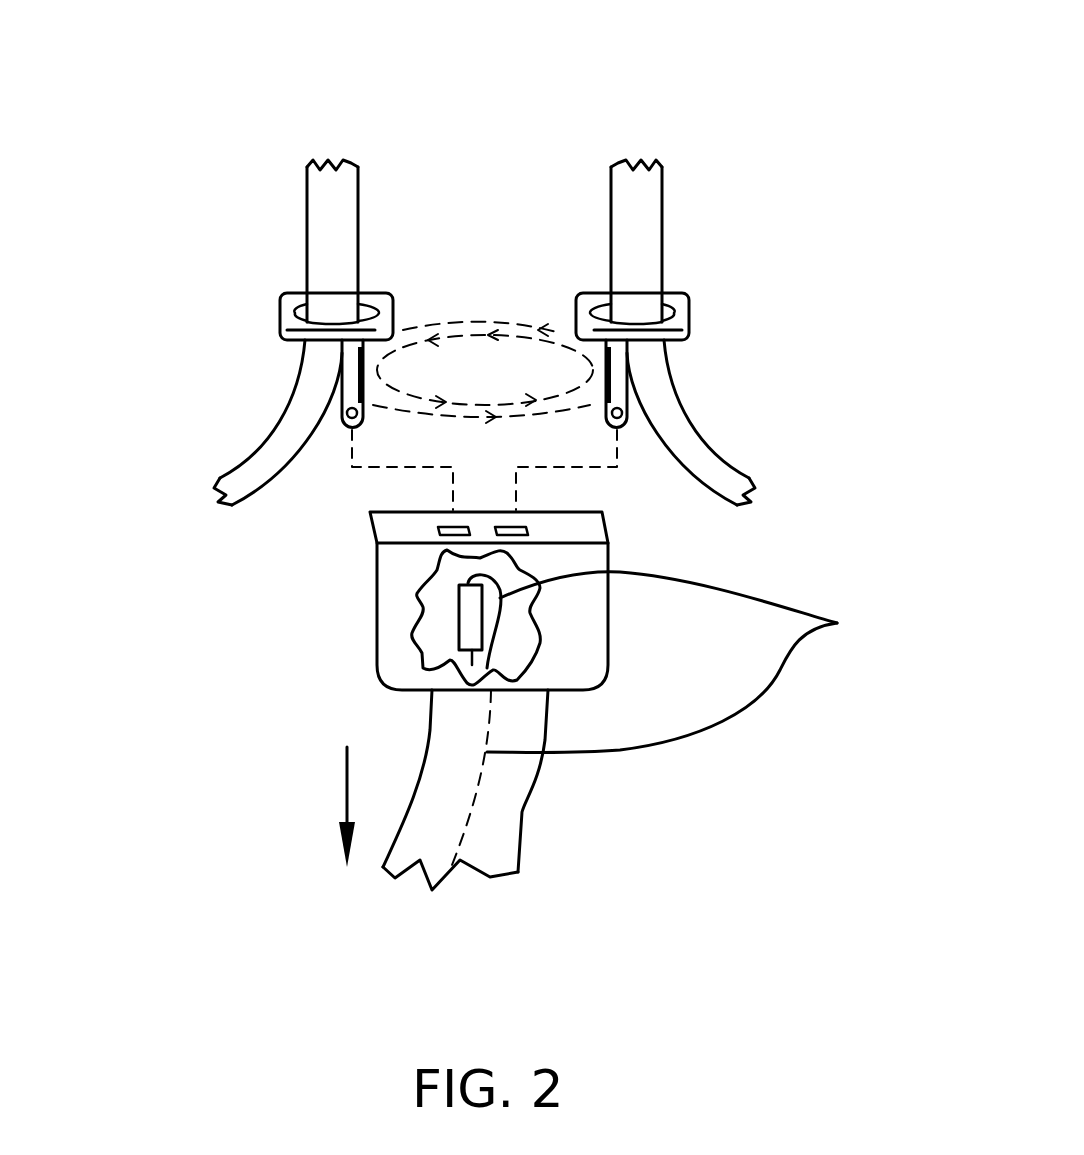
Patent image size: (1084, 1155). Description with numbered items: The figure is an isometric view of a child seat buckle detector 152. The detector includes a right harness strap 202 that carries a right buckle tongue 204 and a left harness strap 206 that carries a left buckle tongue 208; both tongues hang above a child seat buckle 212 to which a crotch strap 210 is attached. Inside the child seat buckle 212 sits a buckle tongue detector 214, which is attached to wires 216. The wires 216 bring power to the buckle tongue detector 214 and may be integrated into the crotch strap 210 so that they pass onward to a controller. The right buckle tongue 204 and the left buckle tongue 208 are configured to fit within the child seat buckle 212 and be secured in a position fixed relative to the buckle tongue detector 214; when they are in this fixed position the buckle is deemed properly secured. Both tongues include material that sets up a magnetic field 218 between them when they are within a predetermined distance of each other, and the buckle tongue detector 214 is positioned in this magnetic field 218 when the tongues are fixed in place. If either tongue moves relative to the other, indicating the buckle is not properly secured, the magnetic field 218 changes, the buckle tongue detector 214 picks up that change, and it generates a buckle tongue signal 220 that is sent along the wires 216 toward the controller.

The child seat buckle detector 152 is at (672, 95).
The right harness strap 202 is at (350, 200).
The right buckle tongue 204 is at (282, 302).
The left harness strap 206 is at (652, 207).
The left buckle tongue 208 is at (683, 310).
The crotch strap 210 is at (522, 812).
The child seat buckle 212 is at (600, 645).
The buckle tongue detector 214 is at (459, 618).
The wires 216 is at (665, 651).
The magnetic field 218 is at (466, 270).
The buckle tongue signal 220 is at (345, 797).